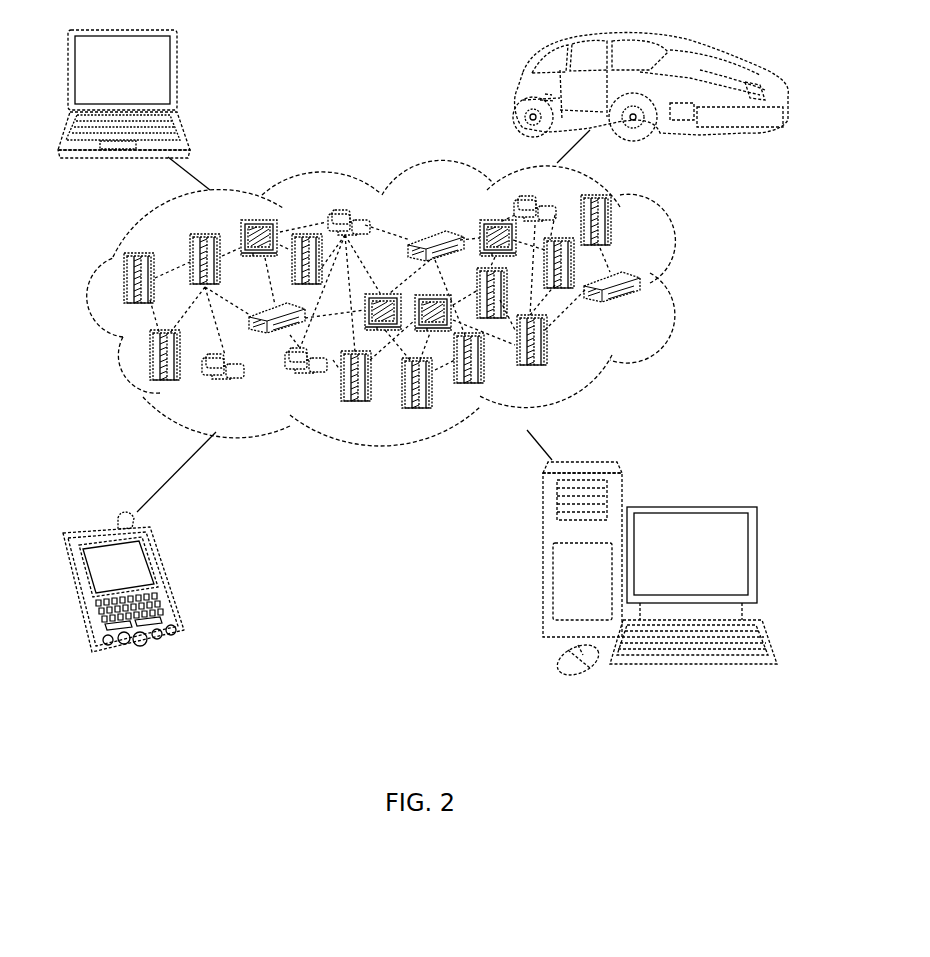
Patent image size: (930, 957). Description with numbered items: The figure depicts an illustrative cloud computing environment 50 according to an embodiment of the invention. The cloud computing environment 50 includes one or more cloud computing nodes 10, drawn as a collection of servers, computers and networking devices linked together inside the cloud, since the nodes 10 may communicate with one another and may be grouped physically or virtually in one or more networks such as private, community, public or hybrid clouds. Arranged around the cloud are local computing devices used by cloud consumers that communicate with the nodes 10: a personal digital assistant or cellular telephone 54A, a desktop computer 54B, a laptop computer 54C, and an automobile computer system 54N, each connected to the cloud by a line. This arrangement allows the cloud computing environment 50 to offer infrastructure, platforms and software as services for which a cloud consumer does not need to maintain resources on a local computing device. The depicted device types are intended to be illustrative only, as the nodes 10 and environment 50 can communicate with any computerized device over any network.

The cloud computing nodes 10 is at (645, 310).
The cloud computing environment 50 is at (688, 283).
The personal digital assistant or cellular telephone 54A is at (166, 570).
The desktop computer 54B is at (690, 507).
The laptop computer 54C is at (177, 80).
The automobile computer system 54N is at (520, 92).